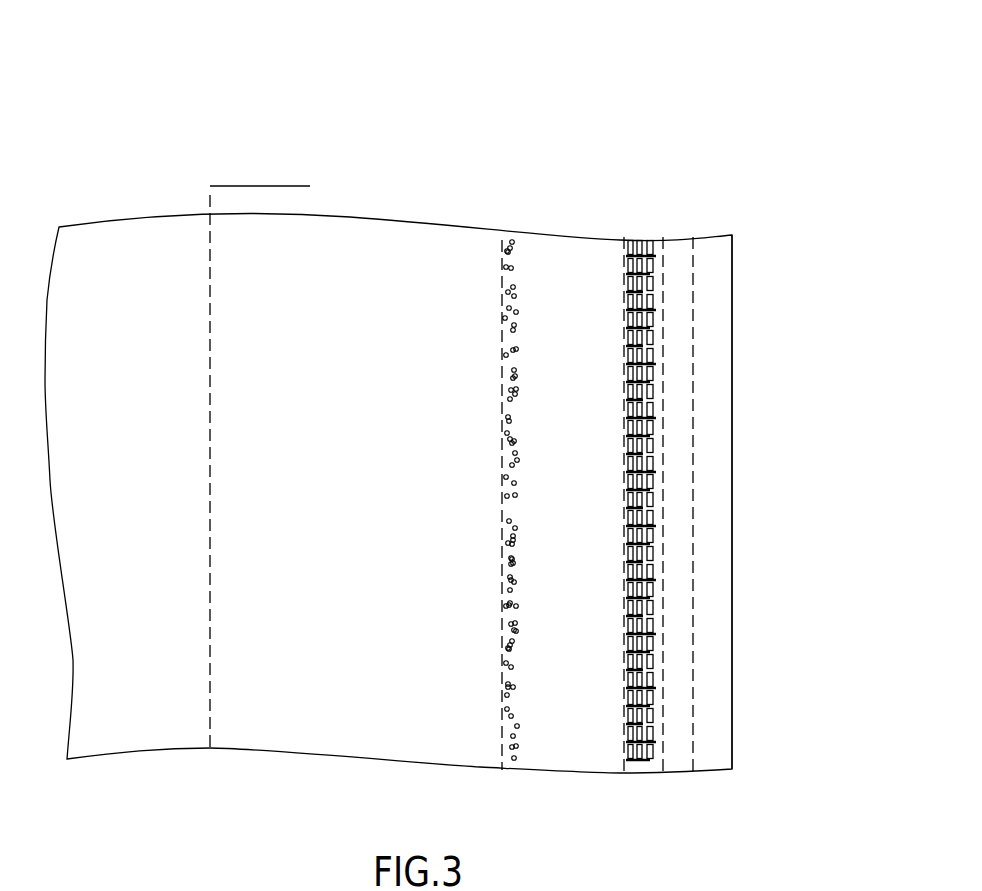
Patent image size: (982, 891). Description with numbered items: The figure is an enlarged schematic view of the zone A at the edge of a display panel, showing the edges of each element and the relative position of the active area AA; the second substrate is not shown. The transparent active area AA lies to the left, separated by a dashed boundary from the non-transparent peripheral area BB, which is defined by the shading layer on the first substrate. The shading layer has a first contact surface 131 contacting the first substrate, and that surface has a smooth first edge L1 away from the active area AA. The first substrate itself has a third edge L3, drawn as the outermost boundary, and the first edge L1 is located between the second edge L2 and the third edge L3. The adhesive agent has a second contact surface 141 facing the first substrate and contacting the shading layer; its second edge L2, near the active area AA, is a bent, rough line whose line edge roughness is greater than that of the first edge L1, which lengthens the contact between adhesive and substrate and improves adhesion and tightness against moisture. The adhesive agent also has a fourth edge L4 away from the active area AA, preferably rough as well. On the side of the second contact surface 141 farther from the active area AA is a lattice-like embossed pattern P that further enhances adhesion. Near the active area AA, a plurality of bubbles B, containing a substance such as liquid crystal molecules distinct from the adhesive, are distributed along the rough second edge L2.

The zone A is at (222, 55).
The active area AA is at (210, 186).
The peripheral area BB is at (315, 186).
The bubbles B is at (505, 310).
The second contact surface 141 is at (548, 265).
The first contact surface 131 is at (680, 250).
The embossed pattern P is at (637, 250).
The first edge L1 is at (693, 403).
The second edge L2 is at (502, 577).
The third edge L3 is at (732, 307).
The fourth edge L4 is at (663, 513).